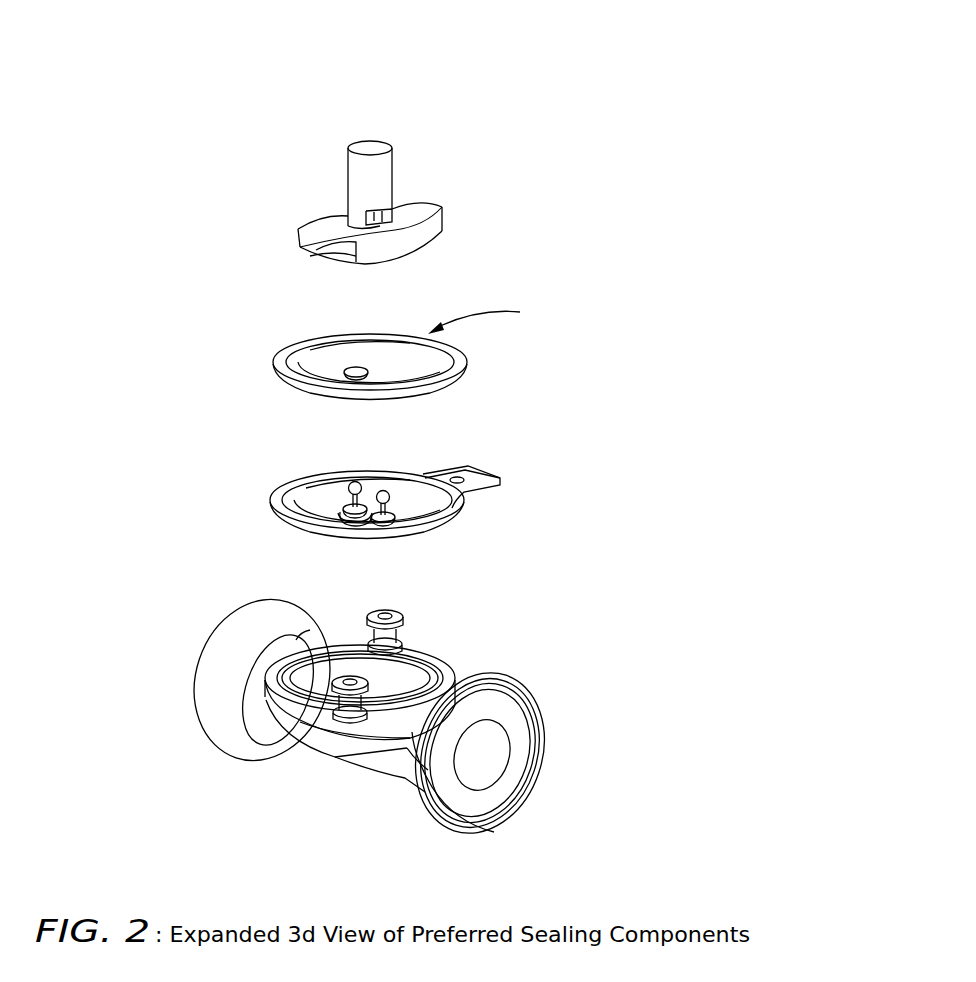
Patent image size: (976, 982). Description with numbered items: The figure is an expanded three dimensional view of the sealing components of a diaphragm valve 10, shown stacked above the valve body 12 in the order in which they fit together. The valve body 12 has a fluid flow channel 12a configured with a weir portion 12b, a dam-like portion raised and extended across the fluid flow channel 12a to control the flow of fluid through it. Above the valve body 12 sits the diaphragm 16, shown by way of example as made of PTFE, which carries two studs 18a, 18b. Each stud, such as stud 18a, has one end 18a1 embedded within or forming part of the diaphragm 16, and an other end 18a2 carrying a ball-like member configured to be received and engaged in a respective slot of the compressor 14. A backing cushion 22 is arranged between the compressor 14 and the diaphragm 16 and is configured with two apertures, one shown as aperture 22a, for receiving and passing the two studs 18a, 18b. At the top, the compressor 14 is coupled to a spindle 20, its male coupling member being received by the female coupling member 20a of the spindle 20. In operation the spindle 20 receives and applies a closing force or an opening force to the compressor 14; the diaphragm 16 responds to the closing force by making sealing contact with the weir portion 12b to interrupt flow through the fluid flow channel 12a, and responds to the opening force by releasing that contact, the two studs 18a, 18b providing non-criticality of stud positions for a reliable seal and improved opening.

The diaphragm valve 10 is at (184, 79).
The valve body 12 is at (538, 703).
The fluid flow channel 12a is at (490, 766).
The weir portion 12b is at (412, 687).
The compressor 14 is at (300, 238).
The diaphragm 16 is at (467, 506).
The stud 18a is at (342, 490).
The one end of stud 18a1 is at (320, 511).
The other end of stud 18a2 is at (427, 467).
The stud 18b is at (400, 519).
The spindle 20 is at (368, 146).
The female coupling member 20a is at (352, 218).
The backing cushion 22 is at (268, 363).
The aperture 22a is at (352, 371).